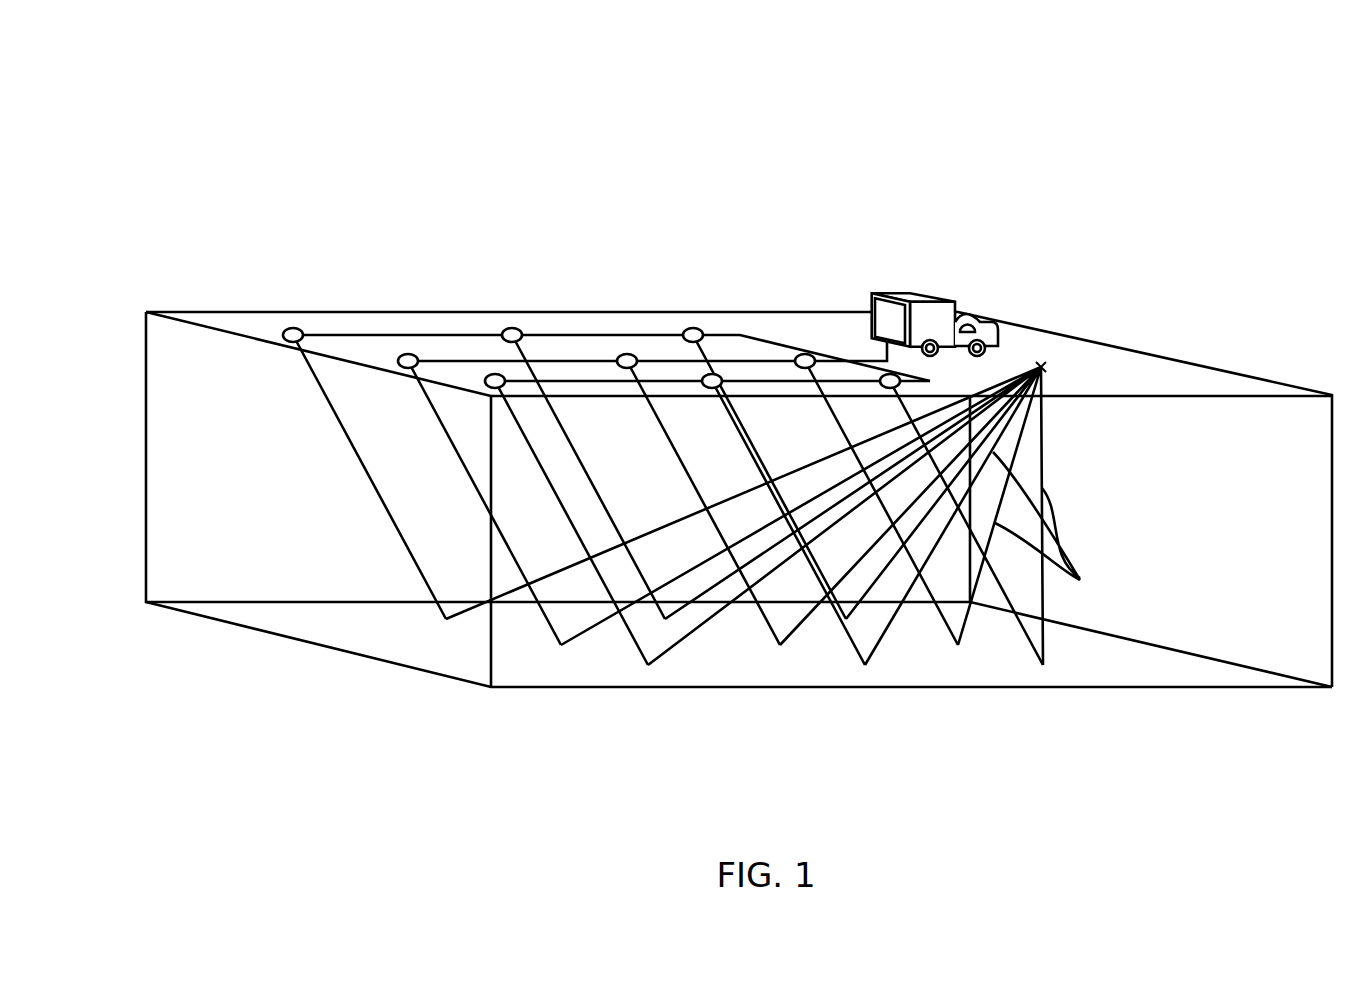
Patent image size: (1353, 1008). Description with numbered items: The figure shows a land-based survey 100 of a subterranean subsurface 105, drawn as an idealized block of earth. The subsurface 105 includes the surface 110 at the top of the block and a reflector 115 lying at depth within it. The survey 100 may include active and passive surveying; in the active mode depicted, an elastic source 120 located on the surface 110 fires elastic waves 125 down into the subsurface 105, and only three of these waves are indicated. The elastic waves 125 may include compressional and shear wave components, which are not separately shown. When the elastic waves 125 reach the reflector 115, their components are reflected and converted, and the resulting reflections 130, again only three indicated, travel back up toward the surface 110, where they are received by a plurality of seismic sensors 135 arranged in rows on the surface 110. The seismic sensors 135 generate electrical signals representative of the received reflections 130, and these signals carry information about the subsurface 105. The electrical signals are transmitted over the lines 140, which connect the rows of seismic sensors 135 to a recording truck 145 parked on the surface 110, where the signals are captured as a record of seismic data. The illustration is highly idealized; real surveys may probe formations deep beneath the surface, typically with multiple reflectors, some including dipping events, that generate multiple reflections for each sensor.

The land-based survey 100 is at (287, 143).
The subterranean subsurface 105 is at (146, 478).
The surface 110 is at (1217, 383).
The reflector 115 is at (468, 658).
The elastic source 120 is at (1041, 367).
The elastic waves 125 is at (1080, 580).
The reflections 130 is at (412, 557).
The seismic sensors 135 is at (292, 328).
The lines 140 is at (598, 333).
The recording truck 145 is at (905, 292).